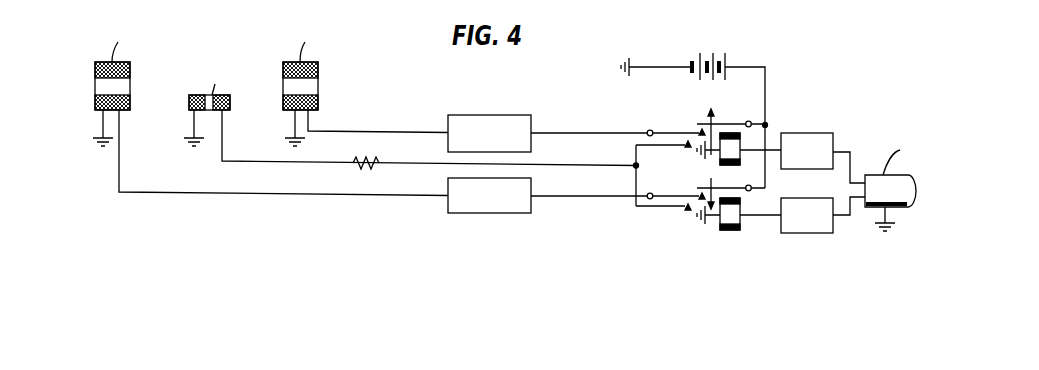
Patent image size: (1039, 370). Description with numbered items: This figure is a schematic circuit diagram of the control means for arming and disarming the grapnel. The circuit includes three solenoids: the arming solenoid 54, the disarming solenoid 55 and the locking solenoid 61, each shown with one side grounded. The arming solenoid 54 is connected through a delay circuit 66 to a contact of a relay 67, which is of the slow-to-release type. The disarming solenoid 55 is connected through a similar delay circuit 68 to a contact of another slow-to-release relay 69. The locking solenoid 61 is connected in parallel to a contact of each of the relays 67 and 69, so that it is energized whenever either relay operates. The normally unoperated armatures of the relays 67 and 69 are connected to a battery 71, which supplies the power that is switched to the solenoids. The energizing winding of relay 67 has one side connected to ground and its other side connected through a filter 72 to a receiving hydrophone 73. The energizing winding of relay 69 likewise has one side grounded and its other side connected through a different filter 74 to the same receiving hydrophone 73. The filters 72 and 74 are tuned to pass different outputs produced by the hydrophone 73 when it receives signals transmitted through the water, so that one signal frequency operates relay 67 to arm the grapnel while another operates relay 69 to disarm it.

The disarming solenoid 55 is at (95, 100).
The locking solenoid 61 is at (189, 100).
The arming solenoid 54 is at (318, 100).
The delay circuit 66 is at (478, 115).
The delay circuit 68 is at (493, 213).
The battery 71 is at (707, 53).
The relay 67 is at (720, 158).
The relay 69 is at (720, 223).
The filter 72 is at (805, 133).
The filter 74 is at (815, 233).
The receiving hydrophone 73 is at (915, 197).